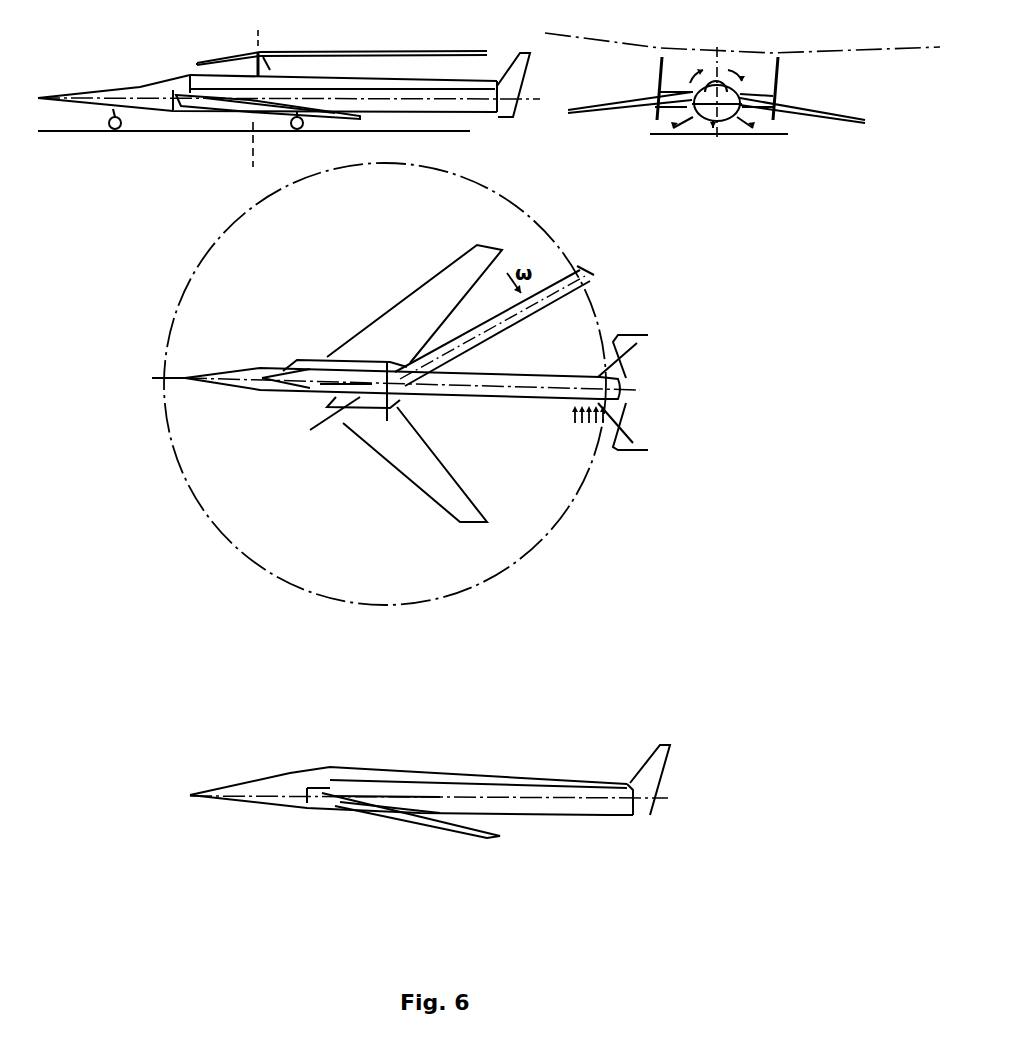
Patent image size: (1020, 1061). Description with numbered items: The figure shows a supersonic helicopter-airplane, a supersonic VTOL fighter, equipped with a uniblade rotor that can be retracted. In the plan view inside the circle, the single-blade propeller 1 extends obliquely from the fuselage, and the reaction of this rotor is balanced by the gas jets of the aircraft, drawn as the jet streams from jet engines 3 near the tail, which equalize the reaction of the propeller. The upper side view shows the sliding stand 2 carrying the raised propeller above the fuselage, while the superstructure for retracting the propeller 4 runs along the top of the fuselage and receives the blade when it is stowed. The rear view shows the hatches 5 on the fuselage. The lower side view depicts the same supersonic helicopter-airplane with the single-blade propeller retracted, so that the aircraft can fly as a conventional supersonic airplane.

The single-blade propeller 1 is at (512, 315).
The sliding stand 2 is at (262, 52).
The jet streams from jet engines 3 is at (574, 415).
The superstructure for retracting the propeller 4 is at (374, 82).
The hatches 5 is at (727, 73).